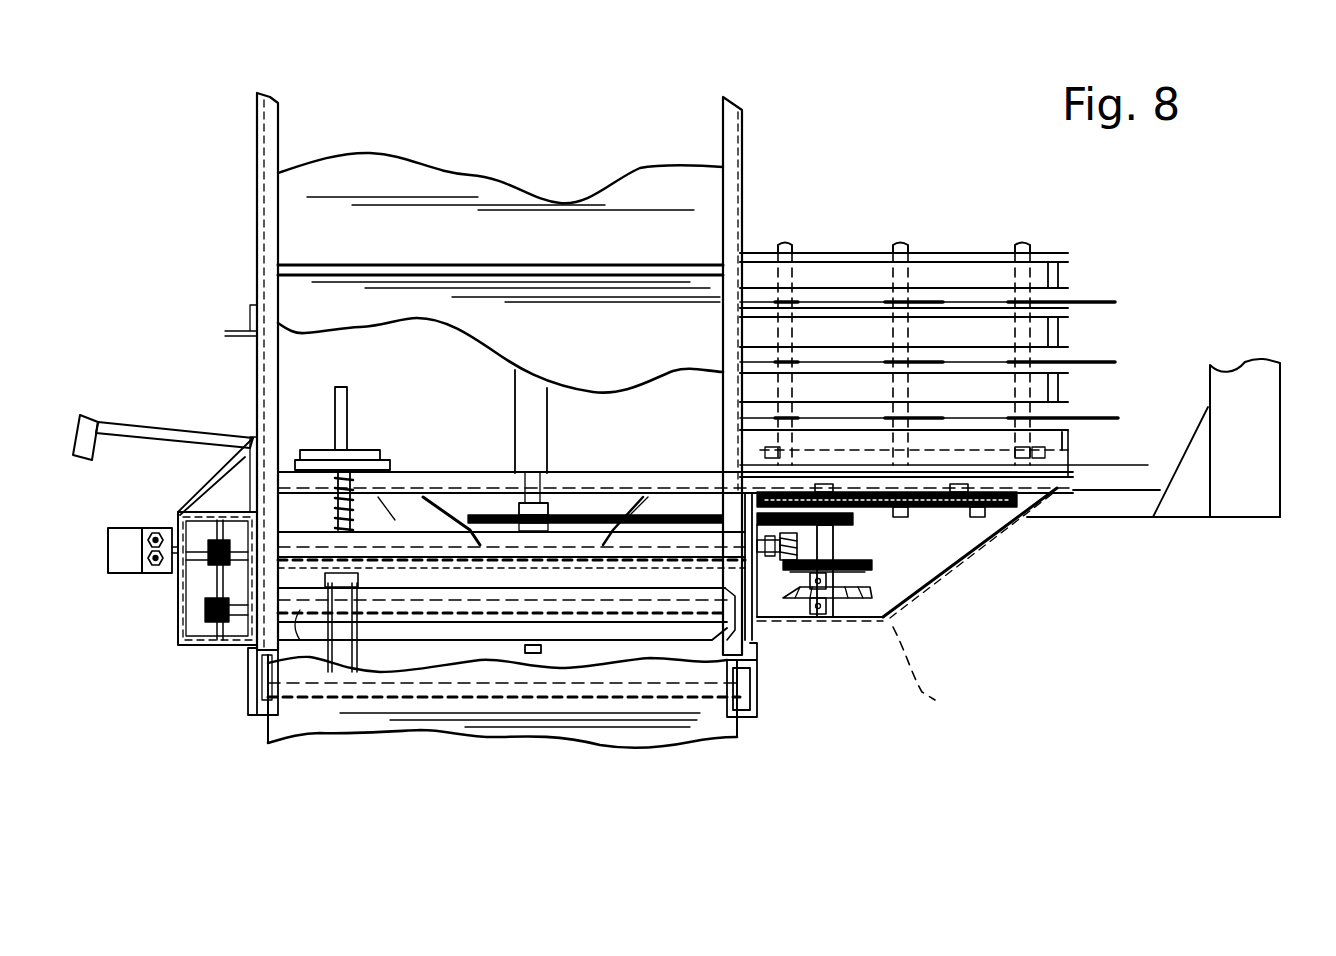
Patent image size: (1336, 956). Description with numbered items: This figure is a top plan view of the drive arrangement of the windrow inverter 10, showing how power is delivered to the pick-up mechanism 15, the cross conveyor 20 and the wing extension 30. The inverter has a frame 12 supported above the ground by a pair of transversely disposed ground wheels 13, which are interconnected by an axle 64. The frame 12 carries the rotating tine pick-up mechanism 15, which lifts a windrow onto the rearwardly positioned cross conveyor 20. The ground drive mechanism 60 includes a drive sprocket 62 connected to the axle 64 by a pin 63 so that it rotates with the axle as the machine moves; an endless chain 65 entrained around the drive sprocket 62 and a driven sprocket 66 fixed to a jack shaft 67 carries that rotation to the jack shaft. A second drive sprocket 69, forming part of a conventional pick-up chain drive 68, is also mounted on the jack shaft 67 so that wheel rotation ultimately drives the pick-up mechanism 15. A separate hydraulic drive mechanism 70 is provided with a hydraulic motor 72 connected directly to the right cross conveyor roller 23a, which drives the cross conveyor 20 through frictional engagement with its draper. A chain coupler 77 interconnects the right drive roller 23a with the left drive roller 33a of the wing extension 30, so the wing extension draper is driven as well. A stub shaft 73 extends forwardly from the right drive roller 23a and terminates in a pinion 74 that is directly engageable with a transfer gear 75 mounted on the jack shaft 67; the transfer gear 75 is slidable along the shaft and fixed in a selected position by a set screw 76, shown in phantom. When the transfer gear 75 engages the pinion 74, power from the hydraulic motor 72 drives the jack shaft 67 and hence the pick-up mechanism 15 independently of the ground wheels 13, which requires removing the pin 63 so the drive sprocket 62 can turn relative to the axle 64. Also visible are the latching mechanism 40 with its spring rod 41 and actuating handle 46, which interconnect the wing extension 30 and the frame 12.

The windrow inverter 10 is at (325, 112).
The cross conveyor 20 is at (672, 125).
The pick-up mechanism 15 is at (1083, 222).
The frame 12 is at (1230, 522).
The latching mechanism 40 is at (388, 434).
The spring rod 41 is at (383, 430).
The drive mechanism 60 is at (550, 433).
The drive sprocket 62 is at (494, 514).
The pin 63 is at (530, 500).
The endless chain 65 is at (583, 540).
The right cross conveyor roller 23a is at (378, 532).
The ground wheels 13 is at (693, 640).
The axle 64 is at (540, 654).
The drive roller 33a is at (313, 630).
The wing extension 30 is at (747, 718).
The hydraulic drive mechanism 70 is at (163, 582).
The actuating handle 46 is at (130, 420).
The hydraulic motor 72 is at (125, 540).
The chain coupler 77 is at (215, 585).
The driven sprocket 66 is at (833, 537).
The jack shaft 67 is at (847, 563).
The pick-up chain drive 68 is at (960, 510).
The second drive sprocket 69 is at (857, 514).
The stub shaft 73 is at (775, 560).
The pinion 74 is at (817, 540).
The transfer gear 75 is at (935, 700).
The set screw 76 is at (873, 598).